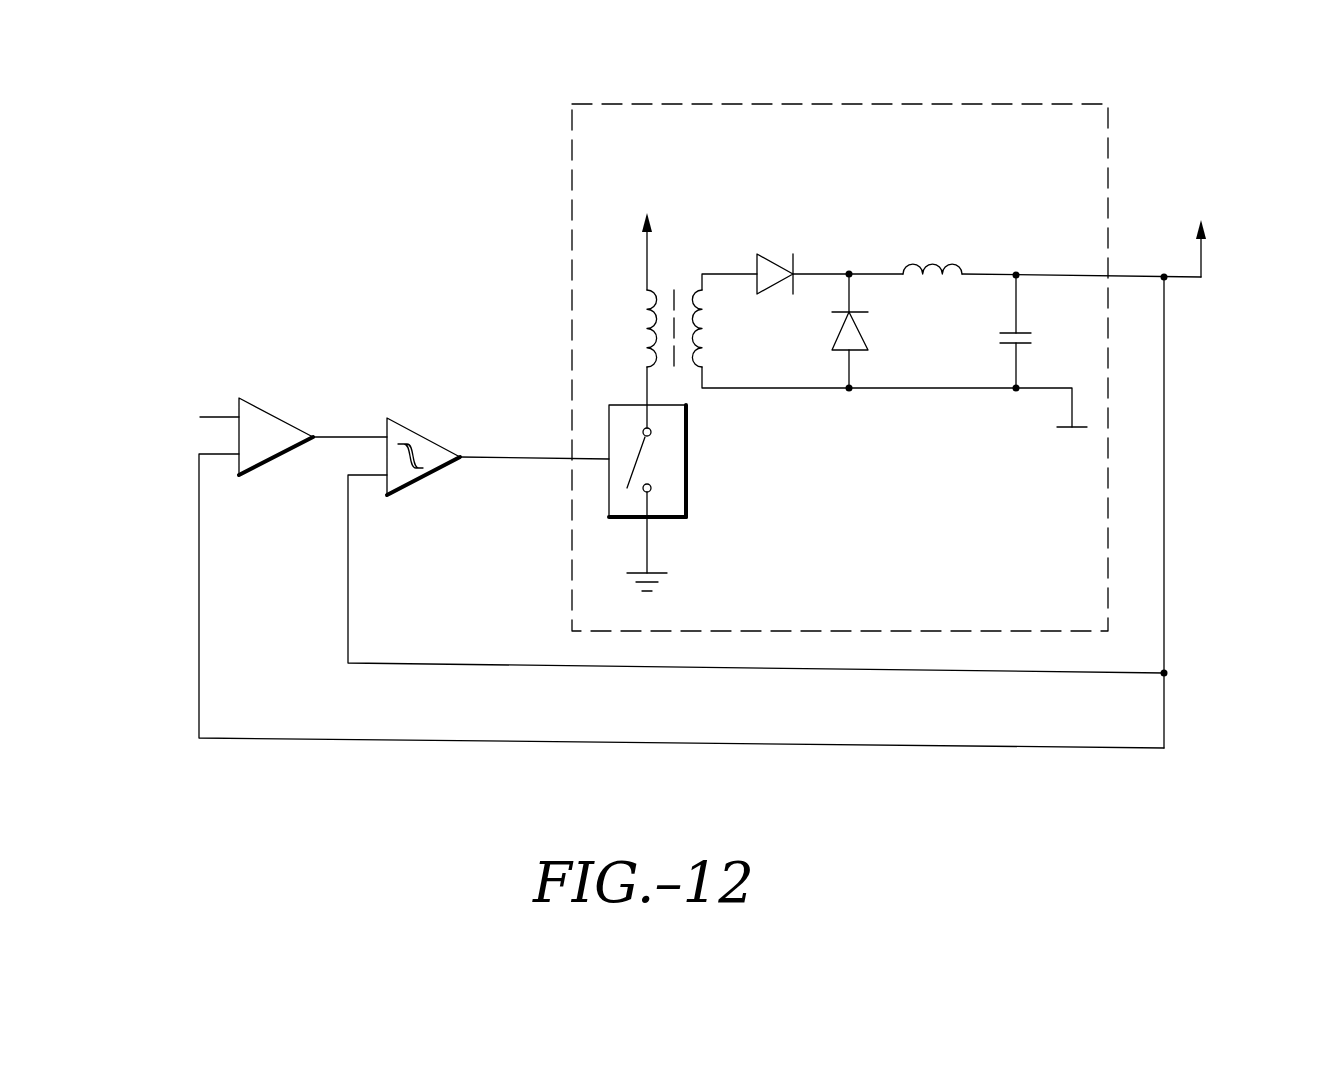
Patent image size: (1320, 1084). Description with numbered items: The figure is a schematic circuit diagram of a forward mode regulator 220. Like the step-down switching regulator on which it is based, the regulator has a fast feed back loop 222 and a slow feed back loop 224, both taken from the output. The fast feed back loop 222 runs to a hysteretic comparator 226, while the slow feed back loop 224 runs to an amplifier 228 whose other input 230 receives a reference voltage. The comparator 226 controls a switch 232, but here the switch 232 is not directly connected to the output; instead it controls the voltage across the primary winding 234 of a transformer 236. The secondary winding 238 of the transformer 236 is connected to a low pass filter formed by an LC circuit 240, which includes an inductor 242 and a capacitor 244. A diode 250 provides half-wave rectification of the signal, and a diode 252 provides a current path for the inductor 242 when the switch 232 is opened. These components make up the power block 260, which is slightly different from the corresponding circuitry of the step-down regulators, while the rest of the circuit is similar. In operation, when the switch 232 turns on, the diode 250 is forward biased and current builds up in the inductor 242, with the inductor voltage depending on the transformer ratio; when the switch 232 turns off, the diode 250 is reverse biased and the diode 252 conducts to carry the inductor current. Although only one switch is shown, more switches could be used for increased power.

The forward mode regulator 220 is at (948, 807).
The fast feed back loop 222 is at (924, 675).
The slow feed back loop 224 is at (1035, 750).
The hysteretic comparator 226 is at (427, 478).
The amplifier 228 is at (280, 460).
The other input 230 is at (217, 415).
The switch 232 is at (696, 536).
The primary winding 234 is at (639, 331).
The transformer 236 is at (837, 268).
The secondary winding 238 is at (707, 330).
The LC circuit 240 is at (1052, 255).
The inductor 242 is at (897, 261).
The capacitor 244 is at (1007, 326).
The diode 250 is at (750, 258).
The diode 252 is at (863, 359).
The power block 260 is at (542, 172).